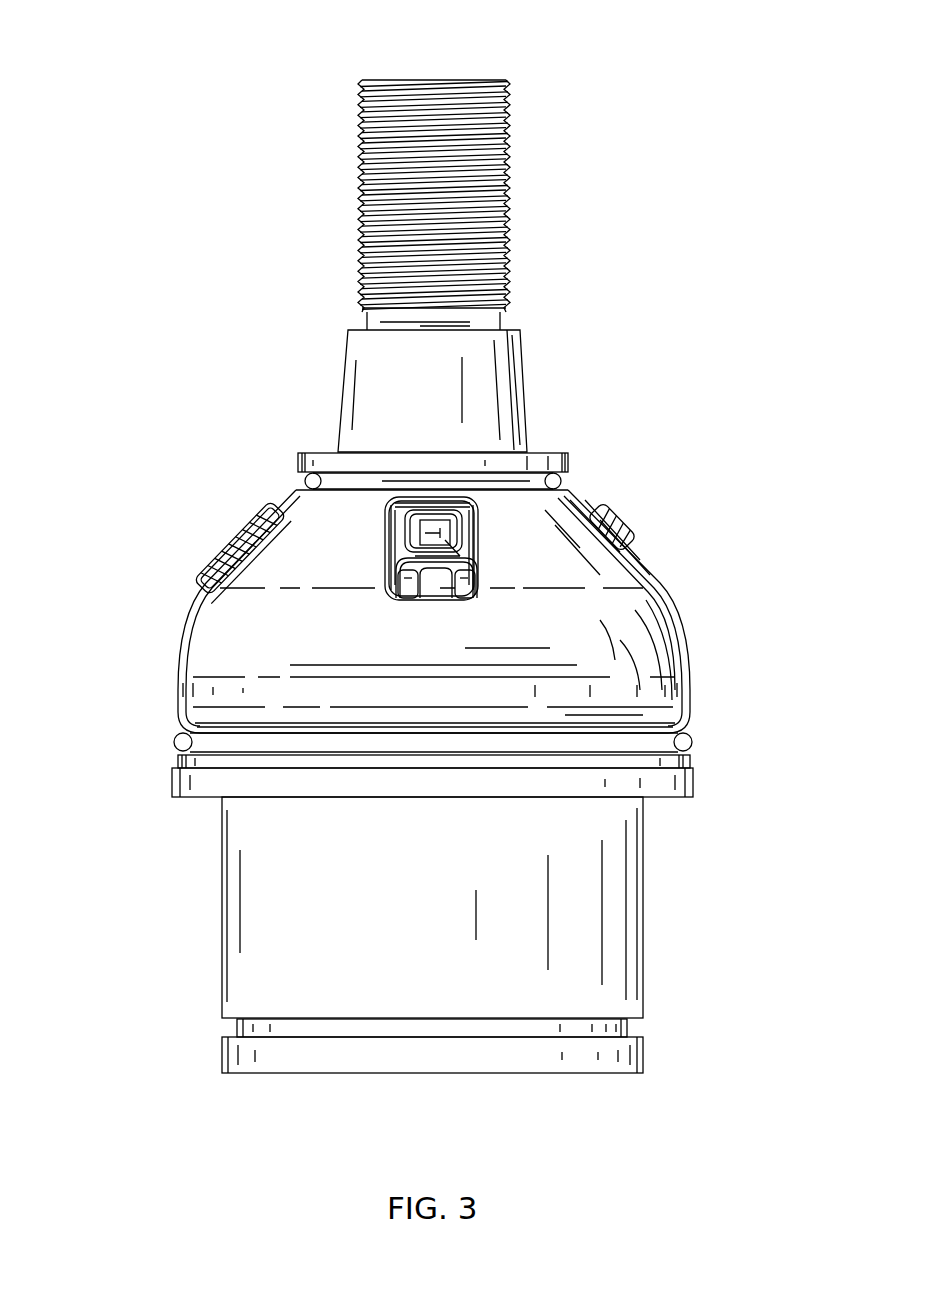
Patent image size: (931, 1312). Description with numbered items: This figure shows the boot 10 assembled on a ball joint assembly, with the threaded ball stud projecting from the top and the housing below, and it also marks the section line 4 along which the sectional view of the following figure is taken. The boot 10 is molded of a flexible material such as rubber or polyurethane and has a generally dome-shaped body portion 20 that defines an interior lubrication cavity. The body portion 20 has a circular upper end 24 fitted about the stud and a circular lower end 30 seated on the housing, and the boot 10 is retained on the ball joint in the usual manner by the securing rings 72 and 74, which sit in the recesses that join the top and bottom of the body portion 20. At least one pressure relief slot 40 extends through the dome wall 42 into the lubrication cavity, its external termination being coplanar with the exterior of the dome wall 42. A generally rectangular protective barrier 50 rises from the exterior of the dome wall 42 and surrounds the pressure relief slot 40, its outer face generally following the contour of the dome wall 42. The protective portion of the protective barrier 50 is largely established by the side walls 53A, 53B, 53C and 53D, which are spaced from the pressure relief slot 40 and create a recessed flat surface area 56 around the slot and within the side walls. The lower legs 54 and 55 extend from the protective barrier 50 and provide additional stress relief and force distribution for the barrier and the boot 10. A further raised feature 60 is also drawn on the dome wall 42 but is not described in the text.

The section line 4- 4 is at (432, 70).
The boot 10 is at (125, 708).
The body portion 20 is at (675, 602).
The circular upper end 24 is at (585, 463).
The circular lower end 30 is at (715, 762).
The pressure relief slot 40 is at (463, 522).
The dome wall 42 is at (521, 522).
The protective barrier 50 is at (185, 545).
The side wall 53A is at (447, 525).
The side wall 53B is at (238, 548).
The side wall 53C is at (436, 578).
The side wall 53D is at (386, 548).
The lower leg 54 is at (408, 598).
The lower leg 55 is at (465, 597).
The recessed flat surface area 56 is at (452, 550).
The second retaining clip 60 is at (612, 518).
The securing ring 72 is at (310, 480).
The securing ring 74 is at (178, 748).